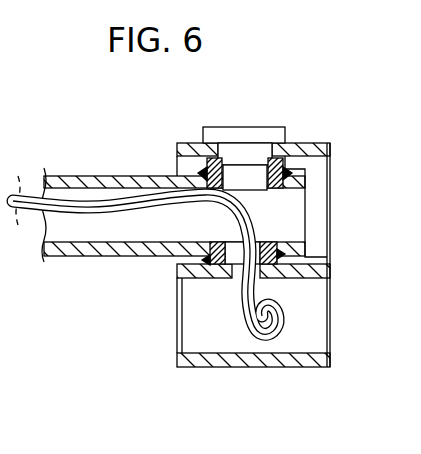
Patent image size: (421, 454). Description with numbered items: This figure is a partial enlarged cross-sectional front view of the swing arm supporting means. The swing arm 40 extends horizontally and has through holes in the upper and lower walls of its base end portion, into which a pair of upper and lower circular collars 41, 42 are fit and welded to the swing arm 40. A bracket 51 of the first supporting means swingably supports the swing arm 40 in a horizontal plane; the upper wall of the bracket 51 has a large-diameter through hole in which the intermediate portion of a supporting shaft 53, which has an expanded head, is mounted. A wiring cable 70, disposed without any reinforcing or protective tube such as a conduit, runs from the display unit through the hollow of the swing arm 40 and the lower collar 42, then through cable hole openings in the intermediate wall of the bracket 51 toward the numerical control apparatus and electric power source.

The swing arm 40 is at (120, 250).
The upper collar 41 is at (273, 163).
The lower collar 42 is at (277, 278).
The bracket 51 is at (183, 367).
The supporting shaft 53 is at (240, 133).
The wiring cable 70 is at (78, 203).